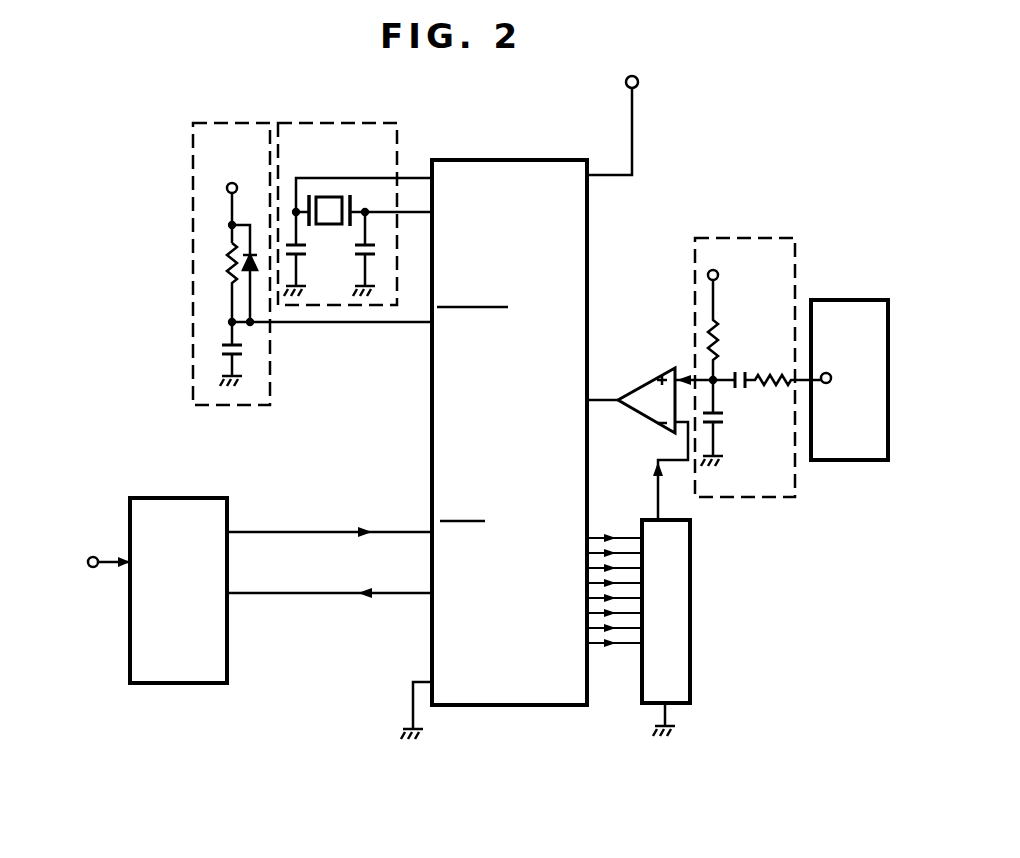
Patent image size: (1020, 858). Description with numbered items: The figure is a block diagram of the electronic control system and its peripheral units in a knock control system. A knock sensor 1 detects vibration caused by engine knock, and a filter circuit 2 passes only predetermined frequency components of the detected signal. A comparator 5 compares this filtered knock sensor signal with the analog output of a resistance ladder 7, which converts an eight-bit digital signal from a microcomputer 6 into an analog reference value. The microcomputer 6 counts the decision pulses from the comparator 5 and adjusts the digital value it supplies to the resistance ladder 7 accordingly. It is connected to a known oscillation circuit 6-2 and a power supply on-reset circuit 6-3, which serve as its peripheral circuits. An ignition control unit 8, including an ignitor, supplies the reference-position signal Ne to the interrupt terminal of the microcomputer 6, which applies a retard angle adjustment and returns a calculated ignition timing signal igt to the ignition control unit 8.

The knock sensor 1 is at (862, 300).
The filter circuit 2 is at (780, 238).
The comparator 5 is at (668, 373).
The microcomputer 6 is at (570, 160).
The oscillation circuit 6-2 is at (365, 123).
The power supply on-reset circuit 6-3 is at (268, 123).
The resistance ladder 7 is at (690, 541).
The ignition control unit 8 is at (205, 498).